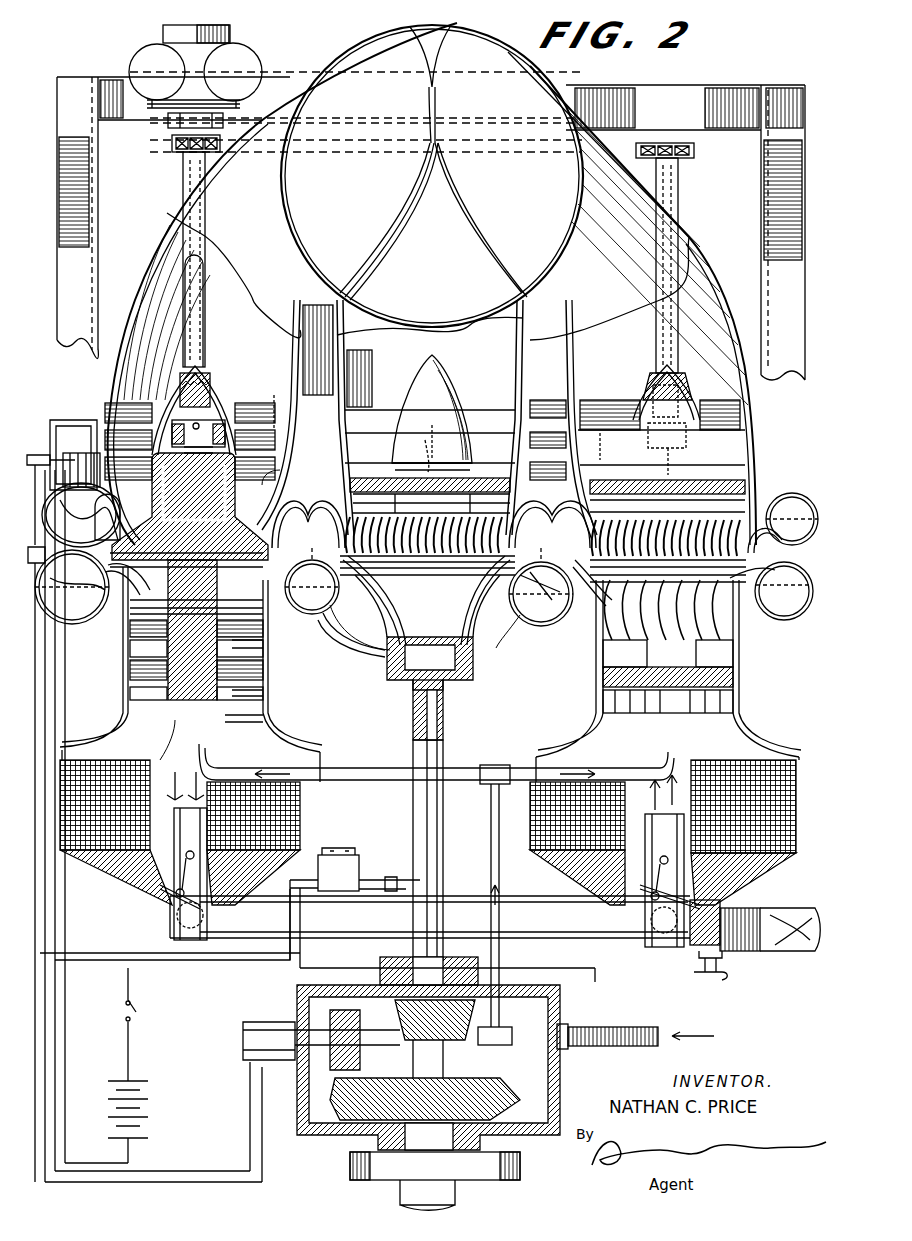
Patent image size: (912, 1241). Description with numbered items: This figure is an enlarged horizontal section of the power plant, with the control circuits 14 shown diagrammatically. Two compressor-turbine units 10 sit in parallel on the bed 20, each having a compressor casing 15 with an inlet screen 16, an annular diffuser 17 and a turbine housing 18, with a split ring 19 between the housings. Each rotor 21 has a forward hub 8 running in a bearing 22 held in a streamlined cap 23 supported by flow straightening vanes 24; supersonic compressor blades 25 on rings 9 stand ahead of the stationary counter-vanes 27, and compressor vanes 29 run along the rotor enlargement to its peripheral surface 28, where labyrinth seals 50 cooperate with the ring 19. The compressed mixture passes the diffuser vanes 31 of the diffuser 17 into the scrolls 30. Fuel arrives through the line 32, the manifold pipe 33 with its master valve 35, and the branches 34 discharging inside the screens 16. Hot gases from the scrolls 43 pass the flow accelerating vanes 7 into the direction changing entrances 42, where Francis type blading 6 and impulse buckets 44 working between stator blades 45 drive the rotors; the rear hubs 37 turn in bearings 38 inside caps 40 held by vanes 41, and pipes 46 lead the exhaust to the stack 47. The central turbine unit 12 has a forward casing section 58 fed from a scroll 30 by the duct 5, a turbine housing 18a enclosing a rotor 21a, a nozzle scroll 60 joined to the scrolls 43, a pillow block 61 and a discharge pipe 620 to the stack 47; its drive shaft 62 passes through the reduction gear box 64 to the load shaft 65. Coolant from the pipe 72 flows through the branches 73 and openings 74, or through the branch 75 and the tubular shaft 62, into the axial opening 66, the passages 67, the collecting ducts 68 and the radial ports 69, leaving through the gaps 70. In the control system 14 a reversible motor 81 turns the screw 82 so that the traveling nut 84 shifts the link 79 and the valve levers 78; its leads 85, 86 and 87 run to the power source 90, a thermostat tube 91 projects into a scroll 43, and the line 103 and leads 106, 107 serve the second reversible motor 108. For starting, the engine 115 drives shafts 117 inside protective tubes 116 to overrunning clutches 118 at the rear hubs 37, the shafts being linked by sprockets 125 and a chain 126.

The duct 5 is at (350, 650).
The Francis type turbine blading 6 is at (137, 534).
The flow accelerating vanes 7 is at (527, 527).
The rotor hub 8 is at (248, 702).
The rings 9 is at (240, 666).
The compressor-turbine unit 10 is at (275, 636).
The turbine unit 12 is at (484, 576).
The control system 14 is at (69, 393).
The compressor casing 15 is at (125, 710).
The inlet screen 16 is at (308, 812).
The annular diffuser 17 is at (115, 598).
The turbine housing 18 is at (335, 420).
The turbine housing of turbine unit 18a is at (522, 434).
The split cylindrical ring 19 is at (318, 600).
The frame or bed 20 is at (72, 312).
The rotor 21 is at (136, 645).
The rotor of turbine unit 21a is at (435, 628).
The bearing 22 is at (255, 684).
The stationary cap 23 is at (255, 714).
The flow straightening vanes 24 is at (136, 696).
The supersonic compressor blades 25 is at (136, 667).
The stationary diffuser or counter-vanes 27 is at (250, 655).
The cylindrical peripheral surface 28 is at (790, 546).
The impeller or compressor vanes 29 is at (180, 648).
The scroll 30 is at (805, 620).
The stationary diffuser vanes 31 is at (324, 548).
The fuel line 32 is at (790, 912).
The manifold pipe 33 is at (622, 942).
The pipe branches 34 is at (160, 888).
The master control valve 35 is at (722, 976).
The rear rotor hub 37 is at (218, 442).
The bearing 38 is at (212, 428).
The cap 40 is at (222, 400).
The streamlined vanes 41 is at (600, 450).
The direction changing annular entrance 42 is at (265, 500).
The scroll 43 is at (810, 480).
The impulse type buckets 44 is at (270, 482).
The stator blades 45 is at (480, 505).
The exhaust pipes 46 is at (158, 245).
The exhaust stack 47 is at (585, 178).
The labyrinth seals 50 is at (412, 560).
The forward casing section 58 is at (358, 578).
The nozzle ring or scroll 60 is at (323, 498).
The pillow block 61 is at (476, 676).
The drive shaft 62 is at (445, 752).
The speed reduction gear box 64 is at (553, 1069).
The load shaft 65 is at (460, 1188).
The axial coolant opening 66 is at (215, 610).
The coolant passages 67 is at (189, 576).
The collecting ducts 68 is at (158, 460).
The radial ports 69 is at (172, 422).
The annular discharge gaps 70 is at (666, 465).
The coolant supply pipe 72 is at (622, 1027).
The branches 73 is at (220, 762).
The openings 74 is at (175, 733).
The third branch 75 is at (466, 1035).
The valve levers 78 is at (425, 859).
The link 79 is at (512, 905).
The reversible electric motor 81 is at (345, 866).
The feed screw 82 is at (374, 866).
The traveling nut 84 is at (396, 880).
The energizing lead 85 is at (298, 968).
The forward lead 86 is at (200, 953).
The reverse lead 87 is at (235, 960).
The electrical power source 90 is at (148, 1116).
The thermostat tube 91 is at (81, 515).
The line 103 is at (250, 1080).
The forward lead 106 is at (48, 1058).
The reverse lead 107 is at (56, 1022).
The reversible motor 108 is at (70, 450).
The starting engine 115 is at (135, 68).
The protective tube 116 is at (205, 323).
The starting shaft 117 is at (200, 348).
The over-running clutch 118 is at (212, 384).
The sprockets 125 is at (175, 155).
The chain 126 is at (256, 150).
The wall 620 is at (339, 386).